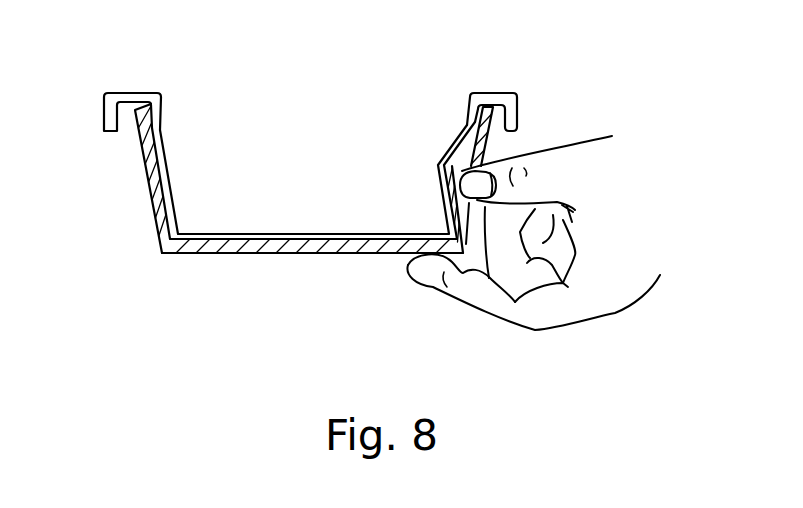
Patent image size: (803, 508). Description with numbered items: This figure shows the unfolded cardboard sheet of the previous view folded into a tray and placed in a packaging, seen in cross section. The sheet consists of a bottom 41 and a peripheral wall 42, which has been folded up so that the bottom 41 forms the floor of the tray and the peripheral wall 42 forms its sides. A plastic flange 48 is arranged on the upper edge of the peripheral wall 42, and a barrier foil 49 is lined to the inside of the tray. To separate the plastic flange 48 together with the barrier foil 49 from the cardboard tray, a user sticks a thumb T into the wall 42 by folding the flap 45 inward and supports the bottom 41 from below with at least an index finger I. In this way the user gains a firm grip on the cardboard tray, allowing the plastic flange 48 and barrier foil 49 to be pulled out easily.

The plastic flange 48 is at (134, 100).
The barrier foil 49 is at (166, 184).
The peripheral wall 42 is at (147, 165).
The bottom 41 is at (278, 254).
The flap 45 is at (455, 197).
The thumb T is at (538, 183).
The index finger I is at (449, 287).